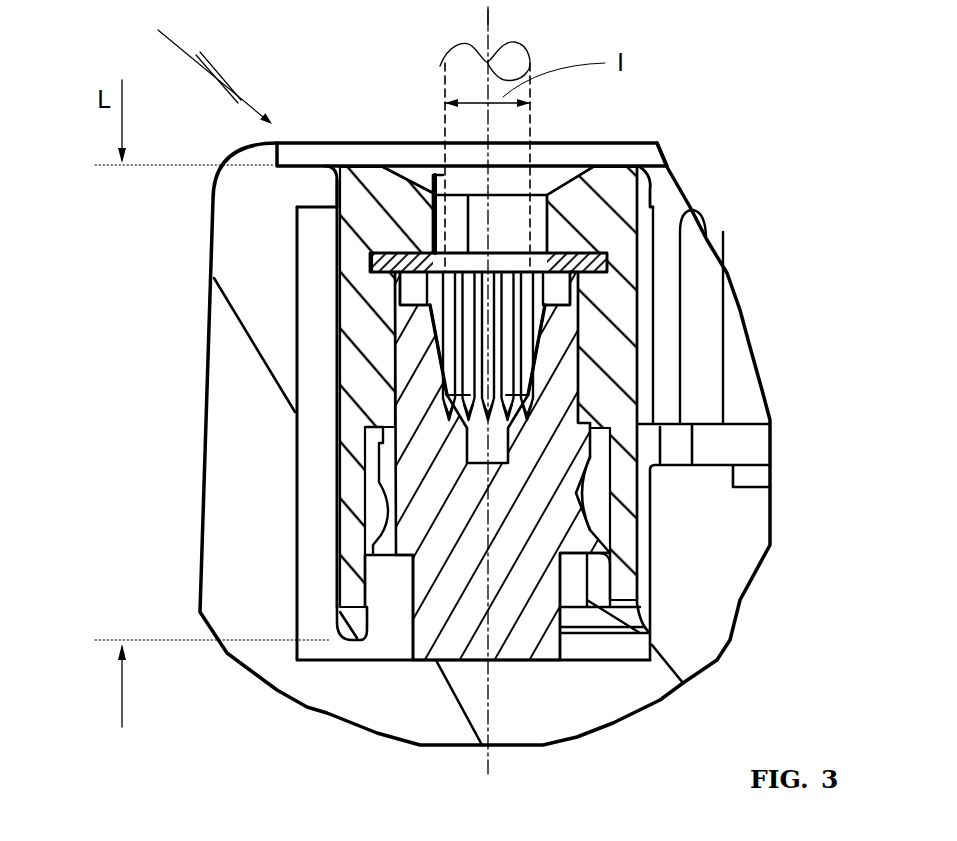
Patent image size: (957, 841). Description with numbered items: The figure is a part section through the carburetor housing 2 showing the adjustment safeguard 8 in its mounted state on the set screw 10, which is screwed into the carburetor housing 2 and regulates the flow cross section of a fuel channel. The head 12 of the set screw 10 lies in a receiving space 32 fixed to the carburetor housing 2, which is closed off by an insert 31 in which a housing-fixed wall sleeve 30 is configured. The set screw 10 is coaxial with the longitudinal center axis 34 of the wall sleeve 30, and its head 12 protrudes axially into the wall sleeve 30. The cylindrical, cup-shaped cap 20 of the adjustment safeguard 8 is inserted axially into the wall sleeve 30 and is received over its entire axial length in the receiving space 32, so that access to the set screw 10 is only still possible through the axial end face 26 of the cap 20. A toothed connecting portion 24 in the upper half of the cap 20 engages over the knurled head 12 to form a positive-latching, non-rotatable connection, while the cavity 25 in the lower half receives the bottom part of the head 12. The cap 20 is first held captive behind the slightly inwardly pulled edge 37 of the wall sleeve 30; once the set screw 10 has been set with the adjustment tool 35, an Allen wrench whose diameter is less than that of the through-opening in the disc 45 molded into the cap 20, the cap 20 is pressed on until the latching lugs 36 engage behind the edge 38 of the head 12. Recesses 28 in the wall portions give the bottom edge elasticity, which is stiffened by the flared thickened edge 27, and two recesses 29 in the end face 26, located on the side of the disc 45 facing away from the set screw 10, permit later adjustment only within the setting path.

The carburetor housing 2 is at (237, 440).
The adjustment safeguard 8 is at (202, 64).
The set screw 10 is at (620, 612).
The head 12 is at (562, 395).
The cap 20 is at (345, 352).
The connecting portion 24 is at (580, 288).
The cavity 25 is at (380, 443).
The end face 26 is at (352, 145).
The thickened edge 27 is at (337, 633).
The recesses 28 is at (387, 620).
The recesses 29 is at (535, 200).
The wall sleeve 30 is at (627, 346).
The insert 31 is at (667, 221).
The receiving space 32 is at (313, 515).
The longitudinal center axis 34 is at (490, 17).
The adjustment tool 35 is at (443, 63).
The latching lugs 36 is at (598, 580).
The edge 37 is at (332, 210).
The edge 38 is at (603, 571).
The disc 45 is at (370, 264).